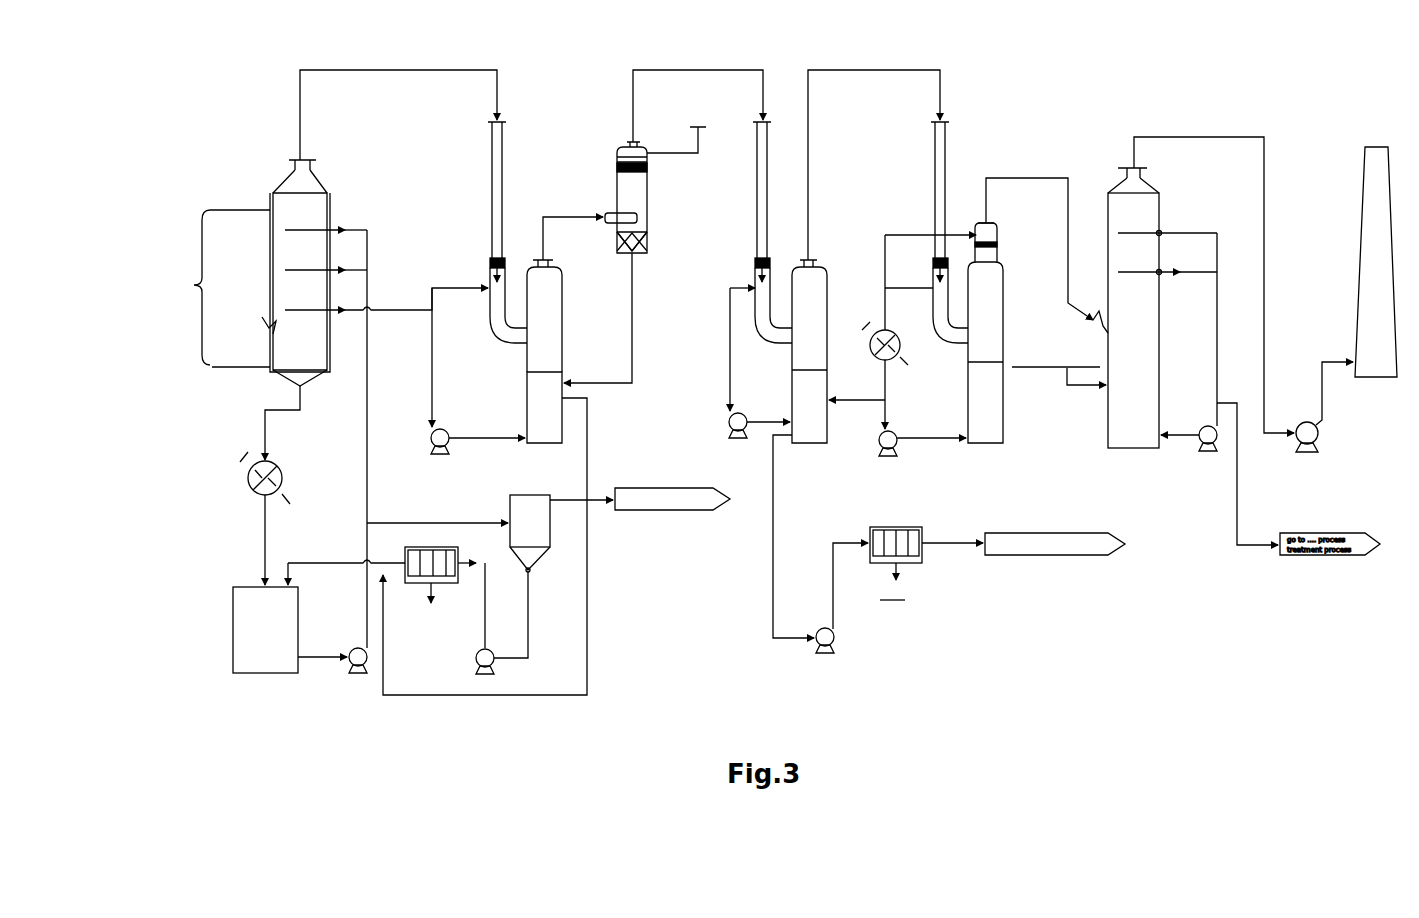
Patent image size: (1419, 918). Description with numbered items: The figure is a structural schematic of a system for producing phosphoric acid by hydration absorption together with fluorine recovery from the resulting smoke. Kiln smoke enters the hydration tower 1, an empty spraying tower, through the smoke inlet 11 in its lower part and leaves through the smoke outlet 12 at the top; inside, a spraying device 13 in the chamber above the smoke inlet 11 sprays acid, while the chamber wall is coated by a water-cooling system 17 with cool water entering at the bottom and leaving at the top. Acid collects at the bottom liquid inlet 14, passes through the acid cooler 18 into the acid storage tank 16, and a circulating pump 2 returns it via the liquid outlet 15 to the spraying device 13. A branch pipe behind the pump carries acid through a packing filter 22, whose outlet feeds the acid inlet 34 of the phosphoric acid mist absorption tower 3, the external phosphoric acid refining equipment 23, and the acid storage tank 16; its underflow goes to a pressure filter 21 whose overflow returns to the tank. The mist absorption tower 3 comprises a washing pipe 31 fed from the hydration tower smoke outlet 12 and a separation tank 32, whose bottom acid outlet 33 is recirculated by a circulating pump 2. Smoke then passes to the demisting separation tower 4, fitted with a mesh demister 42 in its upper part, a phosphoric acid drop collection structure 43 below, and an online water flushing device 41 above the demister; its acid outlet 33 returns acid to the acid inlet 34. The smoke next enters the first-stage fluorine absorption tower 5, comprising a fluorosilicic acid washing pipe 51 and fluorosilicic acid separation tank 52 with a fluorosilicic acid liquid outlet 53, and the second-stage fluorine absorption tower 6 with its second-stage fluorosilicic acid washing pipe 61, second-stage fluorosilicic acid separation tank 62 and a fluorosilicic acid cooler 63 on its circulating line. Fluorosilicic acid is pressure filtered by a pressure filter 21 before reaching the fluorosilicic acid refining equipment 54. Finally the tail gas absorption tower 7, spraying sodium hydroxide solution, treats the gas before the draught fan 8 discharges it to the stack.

The hydration tower 1 is at (285, 205).
The circulating pump 2 is at (350, 655).
The phosphoric acid mist absorption tower 3 is at (490, 267).
The demisting separation tower 4 is at (623, 190).
The first-stage fluorine absorption tower 5 is at (758, 268).
The second-stage fluorine absorption tower 6 is at (938, 260).
The tail gas absorption tower 7 is at (1107, 240).
The draught fan 8 is at (1305, 420).
The smoke inlet 11 is at (268, 322).
The smoke outlet 12 is at (300, 160).
The spraying device 13 is at (285, 270).
The liquid inlet 14 is at (300, 387).
The liquid outlet 15 is at (330, 265).
The acid storage tank 16 is at (245, 618).
The water-cooling system 17 is at (182, 287).
The acid cooler 18 is at (255, 490).
The pressure filter 21 is at (430, 547).
The packing filter 22 is at (510, 505).
The phosphoric acid refining equipment 23 is at (658, 488).
The washing pipe 31 is at (493, 190).
The separation tank 32 is at (540, 395).
The acid outlet 33 is at (525, 433).
The acid inlet 34 is at (565, 383).
The online water flushing device 41 is at (692, 150).
The mesh demister 42 is at (633, 172).
The phosphoric acid drop collection structure 43 is at (632, 250).
The fluorosilicic acid washing pipe 51 is at (758, 220).
The fluorosilicic acid separation tank 52 is at (798, 415).
The fluorosilicic acid liquid outlet 53 is at (788, 435).
The fluorosilicic acid refining equipment 54 is at (987, 540).
The second-stage fluorosilicic acid washing pipe 61 is at (937, 222).
The second-stage fluorosilicic acid separation tank 62 is at (990, 420).
The fluorosilicic acid cooler 63 is at (878, 330).